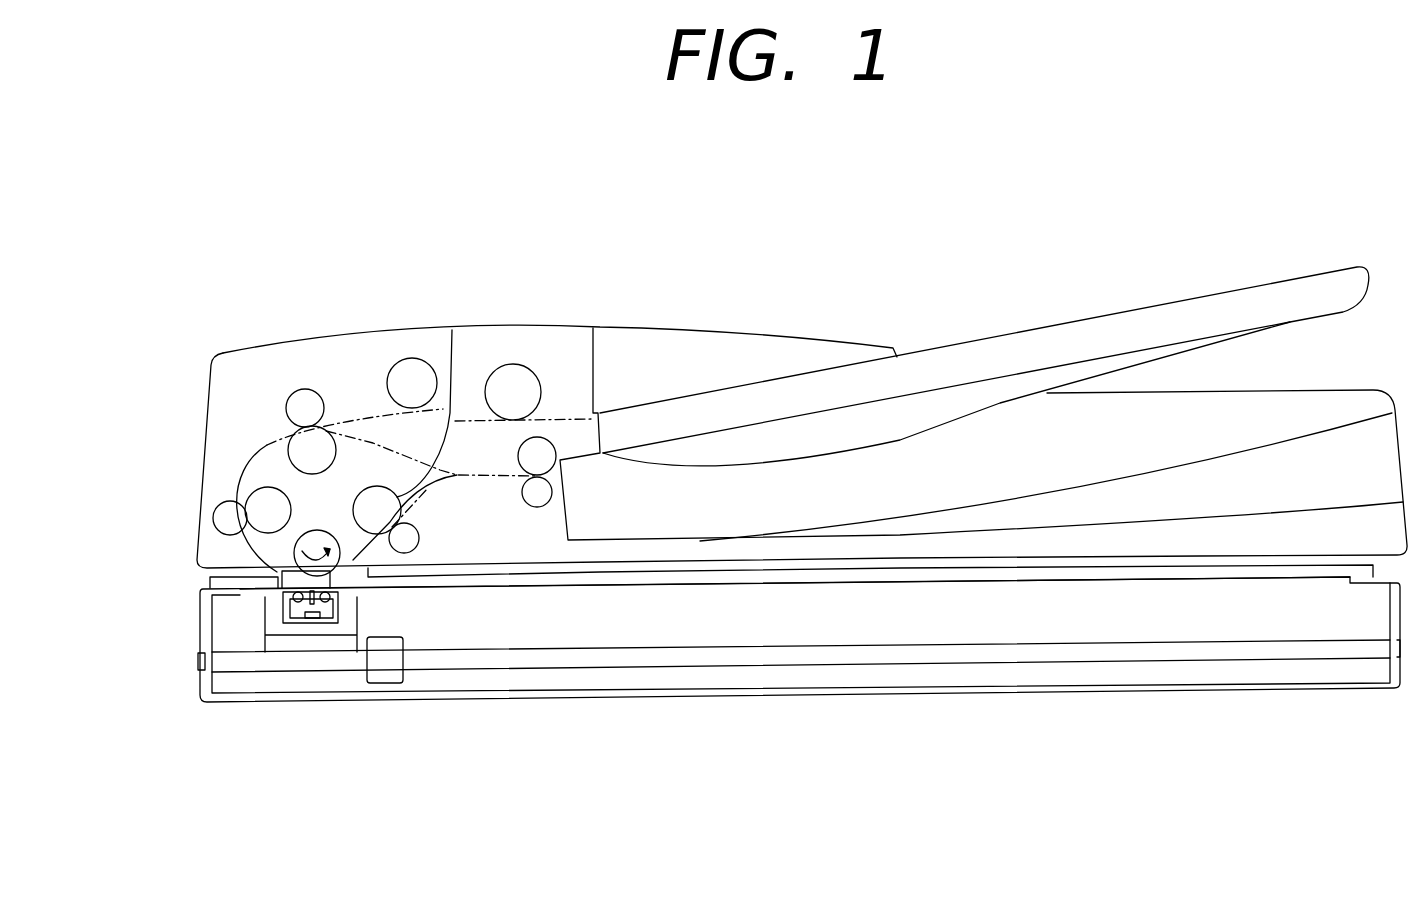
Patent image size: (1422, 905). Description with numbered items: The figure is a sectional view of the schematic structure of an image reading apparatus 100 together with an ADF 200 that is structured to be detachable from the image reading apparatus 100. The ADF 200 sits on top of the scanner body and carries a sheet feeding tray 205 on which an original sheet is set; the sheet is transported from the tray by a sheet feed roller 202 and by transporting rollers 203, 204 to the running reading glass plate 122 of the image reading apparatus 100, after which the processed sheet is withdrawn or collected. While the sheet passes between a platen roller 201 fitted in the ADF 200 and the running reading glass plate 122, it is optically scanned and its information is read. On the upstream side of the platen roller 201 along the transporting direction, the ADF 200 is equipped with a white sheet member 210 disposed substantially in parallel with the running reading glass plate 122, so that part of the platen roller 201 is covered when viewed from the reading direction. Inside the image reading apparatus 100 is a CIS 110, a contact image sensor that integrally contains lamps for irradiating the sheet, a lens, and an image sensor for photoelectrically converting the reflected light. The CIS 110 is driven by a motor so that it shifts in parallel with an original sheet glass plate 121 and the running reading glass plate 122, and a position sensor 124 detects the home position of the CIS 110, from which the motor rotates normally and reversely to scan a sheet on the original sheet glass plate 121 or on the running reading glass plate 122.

The image reading apparatus 100 is at (252, 703).
The CIS (contact image sensor) 110 is at (313, 633).
The original sheet glass plate 121 is at (790, 580).
The running reading glass plate 122 is at (290, 590).
The position sensor 124 is at (388, 687).
The ADF 200 is at (320, 343).
The platen roller 201 is at (296, 553).
The sheet feed roller 202 is at (521, 365).
The transporting roller 203 is at (263, 487).
The transporting roller 204 is at (453, 330).
The sheet feeding tray 205 is at (941, 343).
The white sheet member 210 is at (212, 575).